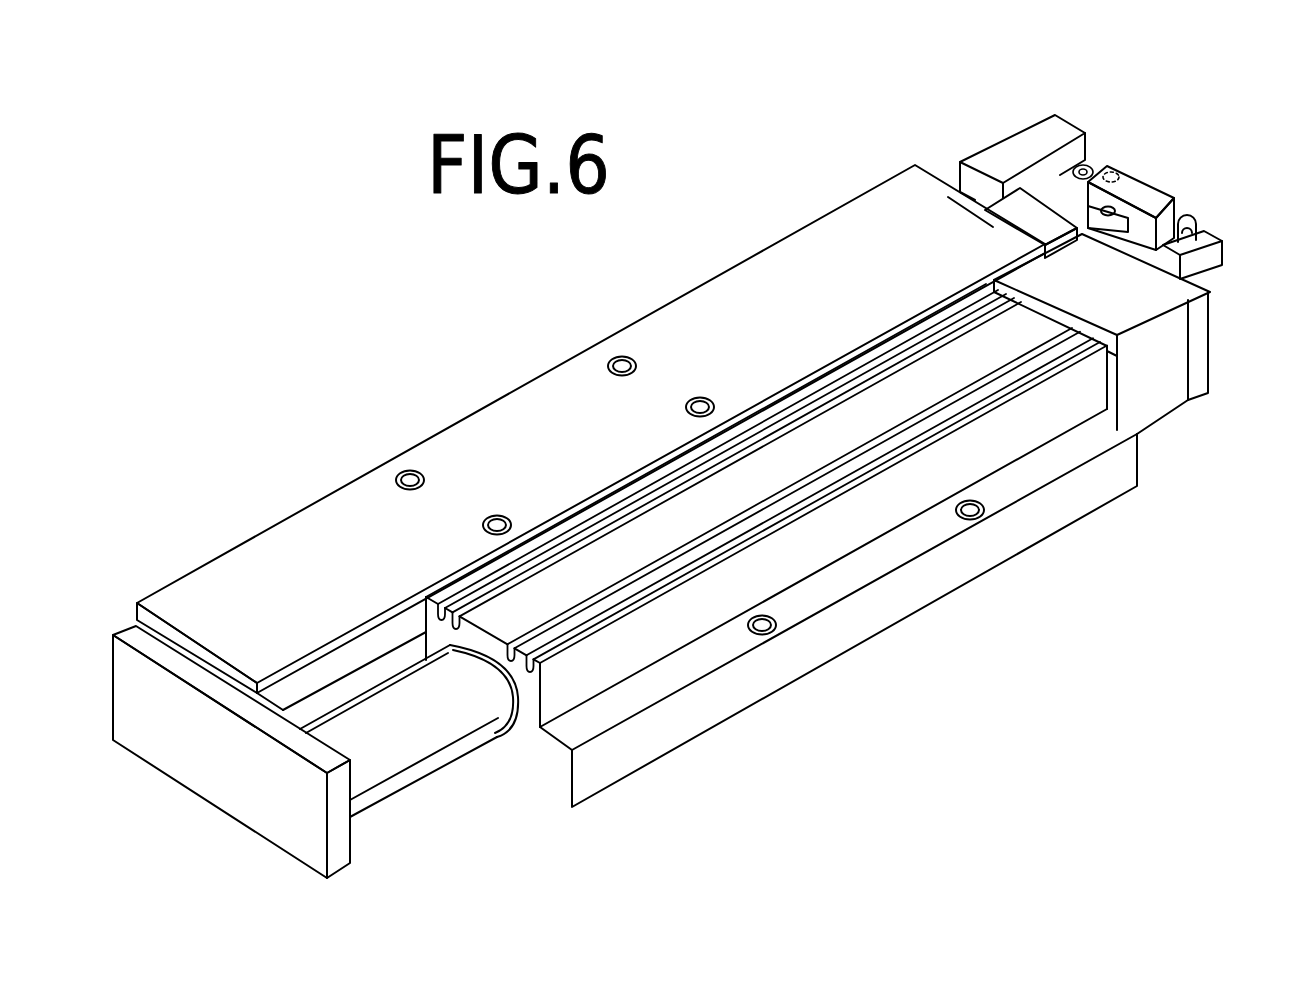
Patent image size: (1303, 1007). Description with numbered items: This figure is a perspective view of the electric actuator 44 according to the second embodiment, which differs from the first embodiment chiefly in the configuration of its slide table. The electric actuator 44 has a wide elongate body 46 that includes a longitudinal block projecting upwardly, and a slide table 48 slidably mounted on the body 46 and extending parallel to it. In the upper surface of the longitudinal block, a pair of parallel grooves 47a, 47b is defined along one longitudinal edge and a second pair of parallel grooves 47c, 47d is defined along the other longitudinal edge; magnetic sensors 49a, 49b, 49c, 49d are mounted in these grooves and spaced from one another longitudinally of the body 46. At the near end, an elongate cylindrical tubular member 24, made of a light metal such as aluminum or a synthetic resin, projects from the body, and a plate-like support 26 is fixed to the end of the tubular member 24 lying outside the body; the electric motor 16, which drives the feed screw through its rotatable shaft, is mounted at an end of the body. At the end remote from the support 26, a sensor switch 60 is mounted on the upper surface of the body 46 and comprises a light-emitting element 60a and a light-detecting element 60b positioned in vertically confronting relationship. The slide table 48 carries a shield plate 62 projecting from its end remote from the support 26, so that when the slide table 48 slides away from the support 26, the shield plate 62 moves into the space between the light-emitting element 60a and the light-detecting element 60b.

The electric motor 16 is at (1152, 402).
The tubular member 24 is at (410, 747).
The support 26 is at (195, 773).
The electric actuator 44 is at (1022, 85).
The body 46 is at (857, 623).
The groove 47a is at (639, 680).
The groove 47b is at (714, 630).
The groove 47c is at (862, 378).
The groove 47d is at (920, 318).
The slide table 48 is at (540, 405).
The magnetic sensor 49a is at (930, 433).
The magnetic sensor 49b is at (1024, 372).
The magnetic sensor 49c is at (507, 576).
The magnetic sensor 49d is at (585, 505).
The sensor switch 60 is at (1186, 186).
The light-emitting element 60a is at (1112, 166).
The light-detecting element 60b is at (1112, 207).
The shield plate 62 is at (1010, 208).